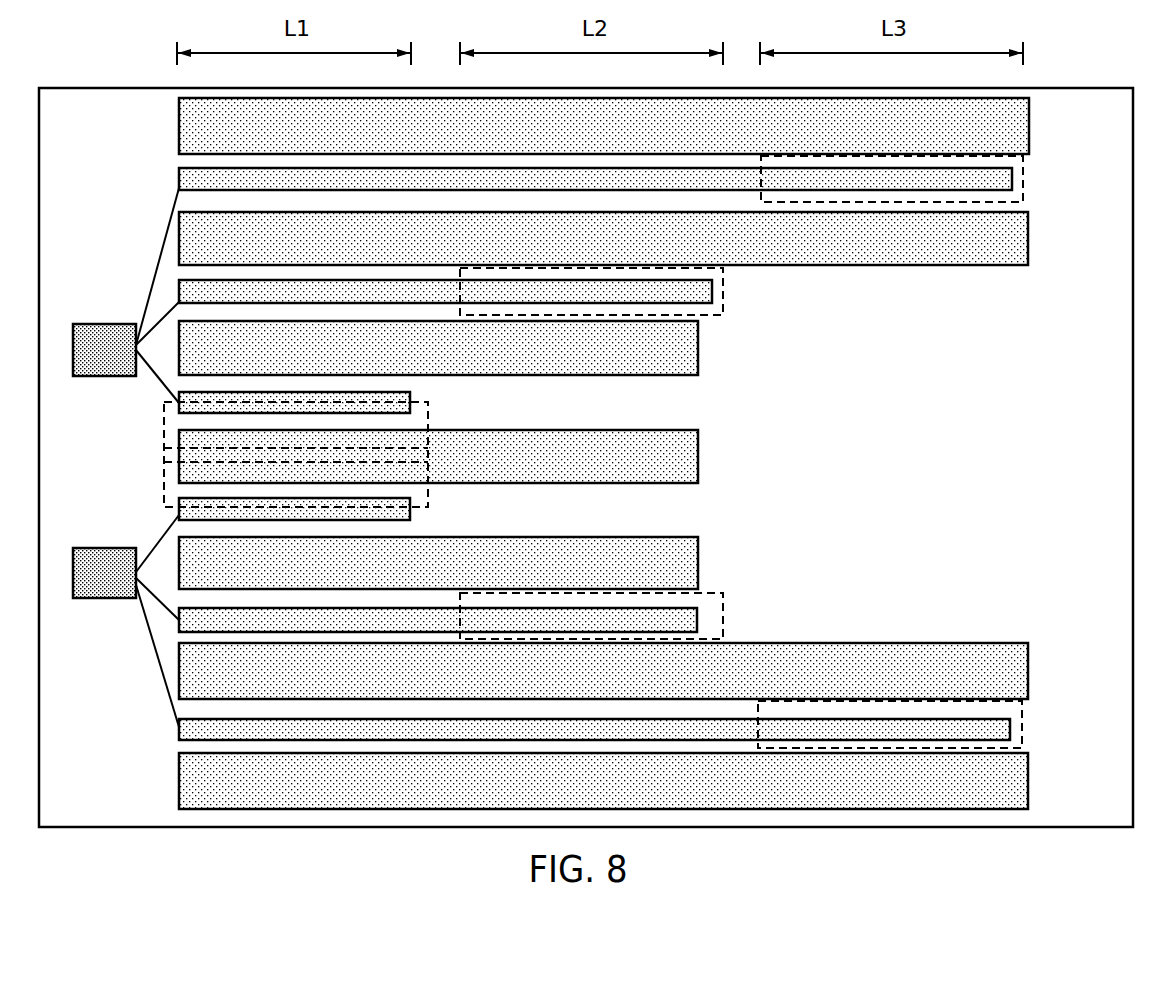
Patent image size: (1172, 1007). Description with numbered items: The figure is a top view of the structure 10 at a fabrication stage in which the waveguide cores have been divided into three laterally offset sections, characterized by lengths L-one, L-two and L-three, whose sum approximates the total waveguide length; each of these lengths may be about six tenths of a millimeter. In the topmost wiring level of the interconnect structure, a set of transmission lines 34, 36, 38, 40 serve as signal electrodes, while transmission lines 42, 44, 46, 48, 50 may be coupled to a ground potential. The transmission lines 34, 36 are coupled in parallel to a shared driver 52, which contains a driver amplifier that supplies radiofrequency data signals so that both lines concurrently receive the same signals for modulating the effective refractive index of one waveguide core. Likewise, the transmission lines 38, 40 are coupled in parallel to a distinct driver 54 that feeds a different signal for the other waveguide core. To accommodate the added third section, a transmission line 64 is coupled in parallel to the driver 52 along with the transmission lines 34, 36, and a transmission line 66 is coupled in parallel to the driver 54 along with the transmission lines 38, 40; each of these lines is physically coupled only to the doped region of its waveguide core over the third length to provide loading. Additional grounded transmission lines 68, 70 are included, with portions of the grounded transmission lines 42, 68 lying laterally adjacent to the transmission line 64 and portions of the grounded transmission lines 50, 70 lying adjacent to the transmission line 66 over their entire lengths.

The structure 10 is at (135, 72).
The transmission line 34 is at (692, 296).
The transmission line 36 is at (395, 404).
The transmission line 38 is at (395, 514).
The transmission line 40 is at (665, 623).
The transmission line 42 is at (993, 243).
The transmission line 44 is at (678, 352).
The transmission line 46 is at (678, 458).
The transmission line 48 is at (678, 576).
The transmission line 50 is at (995, 683).
The driver 52 is at (105, 343).
The driver 54 is at (110, 578).
The transmission line 64 is at (965, 183).
The transmission line 66 is at (985, 733).
The transmission line 68 is at (992, 128).
The transmission line 70 is at (1005, 786).